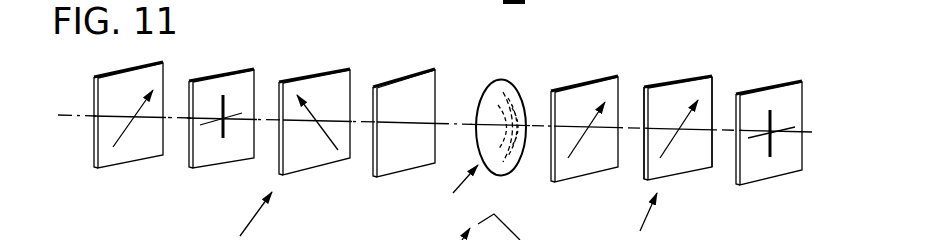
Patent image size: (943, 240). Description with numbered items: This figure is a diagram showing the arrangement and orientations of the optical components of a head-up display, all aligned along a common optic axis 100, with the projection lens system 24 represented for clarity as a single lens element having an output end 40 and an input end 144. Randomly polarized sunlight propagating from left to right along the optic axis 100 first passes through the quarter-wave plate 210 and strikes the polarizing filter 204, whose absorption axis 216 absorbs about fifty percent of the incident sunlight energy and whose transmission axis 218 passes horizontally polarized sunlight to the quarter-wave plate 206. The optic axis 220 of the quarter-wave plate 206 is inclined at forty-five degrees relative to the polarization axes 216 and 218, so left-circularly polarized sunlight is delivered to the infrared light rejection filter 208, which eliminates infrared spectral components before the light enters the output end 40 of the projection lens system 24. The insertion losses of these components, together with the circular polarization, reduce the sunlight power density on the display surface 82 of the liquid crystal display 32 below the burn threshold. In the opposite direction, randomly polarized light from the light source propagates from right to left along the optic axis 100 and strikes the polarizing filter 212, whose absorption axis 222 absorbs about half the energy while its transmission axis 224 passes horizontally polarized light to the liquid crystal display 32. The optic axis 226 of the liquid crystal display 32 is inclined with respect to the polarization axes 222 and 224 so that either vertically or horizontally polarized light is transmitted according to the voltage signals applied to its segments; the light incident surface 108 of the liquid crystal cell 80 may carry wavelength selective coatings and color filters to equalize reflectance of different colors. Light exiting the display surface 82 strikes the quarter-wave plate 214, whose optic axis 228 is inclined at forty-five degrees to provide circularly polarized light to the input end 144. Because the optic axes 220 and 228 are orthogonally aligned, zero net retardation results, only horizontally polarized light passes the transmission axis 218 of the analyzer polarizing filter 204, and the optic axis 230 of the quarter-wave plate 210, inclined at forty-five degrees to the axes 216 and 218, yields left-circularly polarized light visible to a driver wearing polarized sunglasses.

The optic axis 100 is at (820, 134).
The quarter-wave plate 210 is at (117, 160).
The optic axis 230 is at (118, 133).
The polarizing filter 204 is at (226, 158).
The absorption axis 216 is at (223, 102).
The transmission axis 218 is at (208, 128).
The quarter-wave plate 206 is at (318, 158).
The optic axis 220 is at (313, 113).
The infrared light rejection filter 208 is at (403, 167).
The output end 40 is at (477, 110).
The input end 144 is at (518, 167).
The projection lens system 24 is at (455, 189).
The quarter-wave plate 214 is at (590, 167).
The optic axis 228 is at (595, 118).
The liquid crystal cell 80 is at (682, 173).
The display surface 82 is at (648, 153).
The light incident surface 108 is at (697, 160).
The optic axis 226 is at (680, 120).
The liquid crystal display 32 is at (642, 216).
The polarizing filter 212 is at (790, 163).
The absorption axis 222 is at (775, 112).
The transmission axis 224 is at (757, 137).